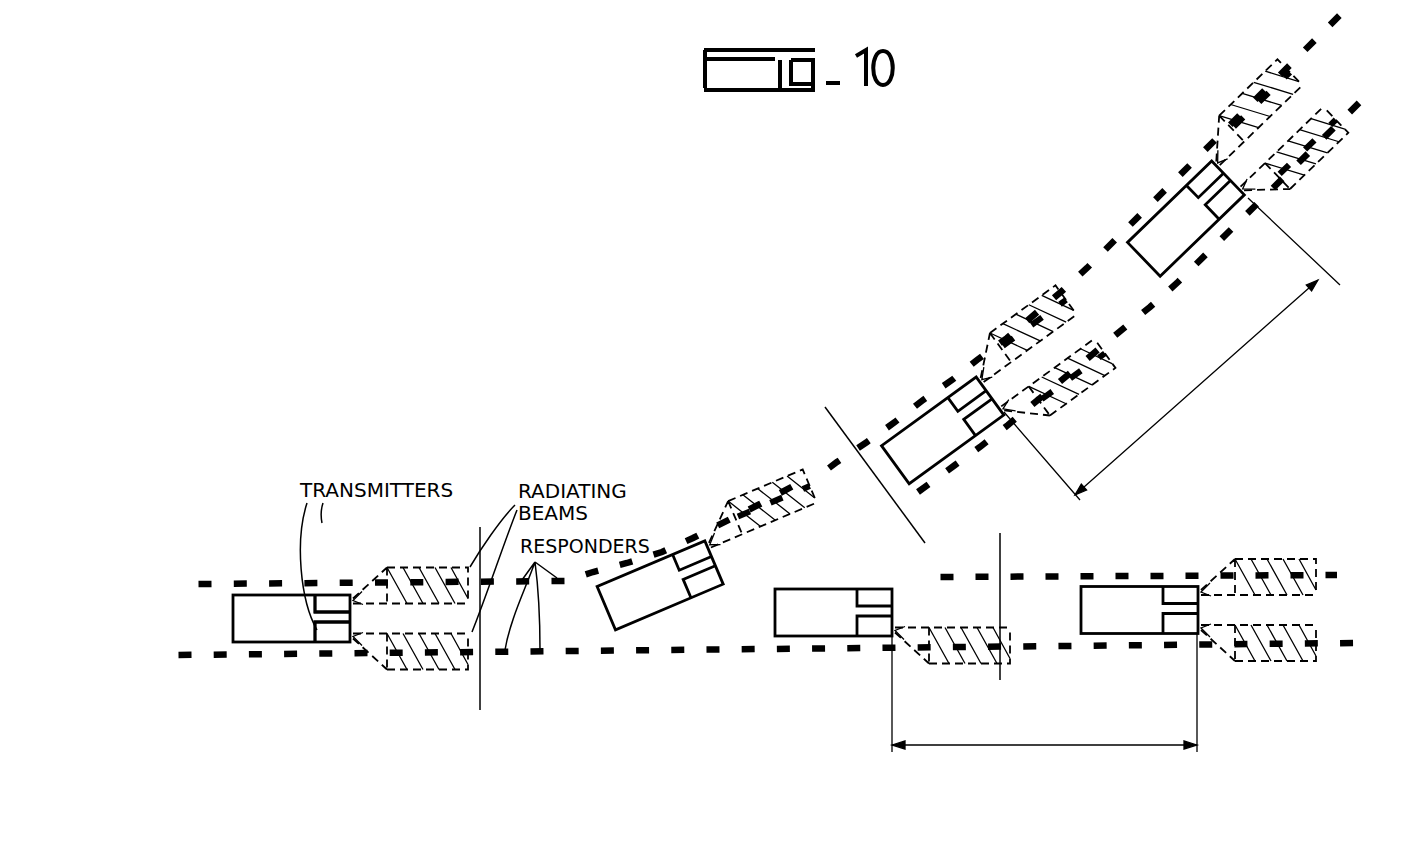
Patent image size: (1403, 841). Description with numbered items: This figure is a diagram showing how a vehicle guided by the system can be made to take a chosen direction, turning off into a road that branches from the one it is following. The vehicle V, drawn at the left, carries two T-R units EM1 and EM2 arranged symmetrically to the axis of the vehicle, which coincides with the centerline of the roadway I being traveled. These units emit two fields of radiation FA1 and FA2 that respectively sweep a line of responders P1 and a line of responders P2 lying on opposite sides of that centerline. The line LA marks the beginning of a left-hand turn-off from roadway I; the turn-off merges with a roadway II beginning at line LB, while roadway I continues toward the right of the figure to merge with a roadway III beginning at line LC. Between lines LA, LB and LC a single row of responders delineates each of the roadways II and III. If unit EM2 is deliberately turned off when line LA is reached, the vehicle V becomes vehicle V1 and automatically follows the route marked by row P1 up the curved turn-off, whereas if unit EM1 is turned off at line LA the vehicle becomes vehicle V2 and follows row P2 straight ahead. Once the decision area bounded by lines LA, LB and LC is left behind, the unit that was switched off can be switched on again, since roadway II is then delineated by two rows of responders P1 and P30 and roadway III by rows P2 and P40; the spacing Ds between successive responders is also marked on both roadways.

The vehicle V is at (220, 523).
The vehicle veering to the left V1 is at (920, 395).
The vehicle moving straight ahead V2 is at (986, 612).
The T-R unit EM1 is at (333, 603).
The T-R unit EM2 is at (333, 633).
The field of radiation FA1 is at (437, 567).
The field of radiation FA2 is at (1333, 157).
The line of responders P1 is at (760, 298).
The line of responders P2 is at (770, 396).
The row of responders P30 is at (951, 512).
The row of responders P40 is at (1344, 572).
The line LA is at (470, 605).
The line LB is at (858, 462).
The line LC is at (991, 595).
The spacing distance Ds is at (1116, 475).
The roadway I is at (433, 618).
The roadway II is at (1107, 298).
The roadway III is at (1044, 617).